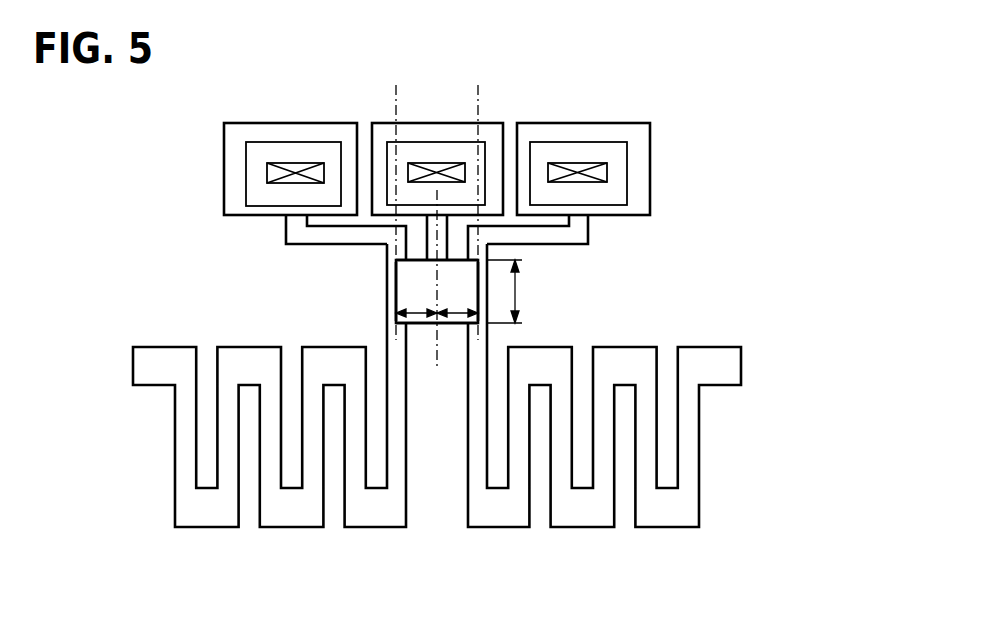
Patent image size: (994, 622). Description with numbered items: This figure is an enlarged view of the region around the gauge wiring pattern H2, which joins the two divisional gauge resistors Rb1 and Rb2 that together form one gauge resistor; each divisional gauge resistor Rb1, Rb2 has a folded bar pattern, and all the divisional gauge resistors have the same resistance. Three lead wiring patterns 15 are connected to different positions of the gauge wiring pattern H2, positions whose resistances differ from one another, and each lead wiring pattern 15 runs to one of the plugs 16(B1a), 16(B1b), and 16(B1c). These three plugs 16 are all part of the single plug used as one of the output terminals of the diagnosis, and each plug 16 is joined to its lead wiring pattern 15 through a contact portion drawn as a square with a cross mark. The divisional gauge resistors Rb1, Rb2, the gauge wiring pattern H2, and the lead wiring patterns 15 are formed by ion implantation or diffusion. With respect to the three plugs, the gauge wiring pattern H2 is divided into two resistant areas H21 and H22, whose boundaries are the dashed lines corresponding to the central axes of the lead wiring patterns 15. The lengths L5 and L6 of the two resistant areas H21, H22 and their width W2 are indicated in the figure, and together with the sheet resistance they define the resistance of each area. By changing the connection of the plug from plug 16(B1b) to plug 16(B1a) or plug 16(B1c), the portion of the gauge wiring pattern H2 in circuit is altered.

The plug 16 is at (511, 113).
The plug 16 B1c is at (312, 123).
The plug 16 B1b is at (420, 123).
The plug 16 B1a is at (533, 123).
The lead wiring pattern 15 is at (297, 235).
The gauge wiring pattern H2 is at (410, 292).
The resistant area H21 is at (457, 268).
The resistant area H22 is at (410, 275).
The width W2 is at (523, 291).
The divisional gauge resistor Rb2 is at (295, 515).
The divisional gauge resistor Rb1 is at (578, 513).
The length L6 is at (415, 323).
The length L5 is at (458, 323).